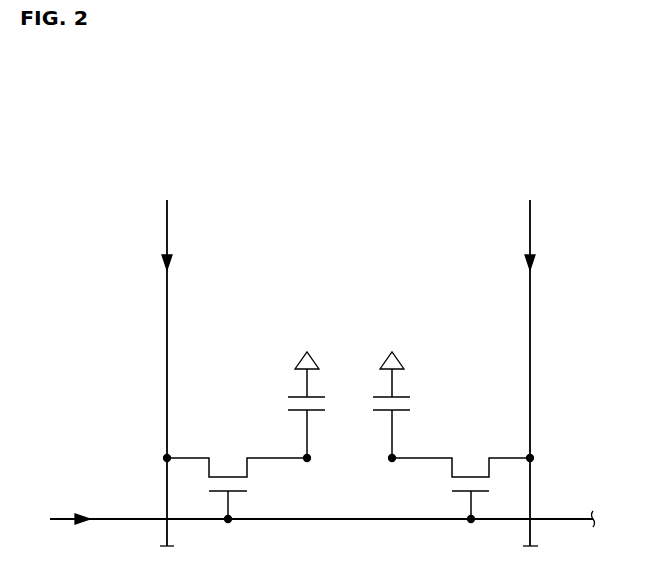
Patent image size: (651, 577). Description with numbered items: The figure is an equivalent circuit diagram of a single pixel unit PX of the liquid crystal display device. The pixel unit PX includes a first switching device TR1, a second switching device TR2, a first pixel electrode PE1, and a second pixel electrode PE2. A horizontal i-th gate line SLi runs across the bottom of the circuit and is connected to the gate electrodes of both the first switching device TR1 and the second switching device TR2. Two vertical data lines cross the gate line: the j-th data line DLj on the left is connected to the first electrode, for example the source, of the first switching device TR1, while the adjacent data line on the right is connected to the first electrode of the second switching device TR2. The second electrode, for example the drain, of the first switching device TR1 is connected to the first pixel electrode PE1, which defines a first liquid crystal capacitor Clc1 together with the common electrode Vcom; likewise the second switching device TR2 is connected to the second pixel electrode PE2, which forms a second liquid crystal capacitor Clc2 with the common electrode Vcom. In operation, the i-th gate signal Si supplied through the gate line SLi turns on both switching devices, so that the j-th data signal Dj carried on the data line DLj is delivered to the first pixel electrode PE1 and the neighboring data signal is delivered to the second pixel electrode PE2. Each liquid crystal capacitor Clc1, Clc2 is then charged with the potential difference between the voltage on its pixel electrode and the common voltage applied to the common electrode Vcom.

The pixel unit PX is at (318, 319).
The i-th gate line SLi is at (317, 509).
The i-th gate signal Si is at (78, 532).
The j-th data line DLj is at (197, 373).
The j-th data signal Dj is at (181, 268).
The first switching device TR1 is at (236, 475).
The second switching device TR2 is at (463, 475).
The first pixel electrode PE1 is at (305, 448).
The second pixel electrode PE2 is at (391, 448).
The first liquid crystal capacitor Clc1 is at (283, 393).
The second liquid crystal capacitor Clc2 is at (416, 393).
The common electrode Vcom is at (351, 346).